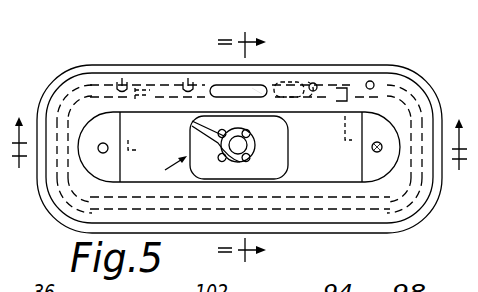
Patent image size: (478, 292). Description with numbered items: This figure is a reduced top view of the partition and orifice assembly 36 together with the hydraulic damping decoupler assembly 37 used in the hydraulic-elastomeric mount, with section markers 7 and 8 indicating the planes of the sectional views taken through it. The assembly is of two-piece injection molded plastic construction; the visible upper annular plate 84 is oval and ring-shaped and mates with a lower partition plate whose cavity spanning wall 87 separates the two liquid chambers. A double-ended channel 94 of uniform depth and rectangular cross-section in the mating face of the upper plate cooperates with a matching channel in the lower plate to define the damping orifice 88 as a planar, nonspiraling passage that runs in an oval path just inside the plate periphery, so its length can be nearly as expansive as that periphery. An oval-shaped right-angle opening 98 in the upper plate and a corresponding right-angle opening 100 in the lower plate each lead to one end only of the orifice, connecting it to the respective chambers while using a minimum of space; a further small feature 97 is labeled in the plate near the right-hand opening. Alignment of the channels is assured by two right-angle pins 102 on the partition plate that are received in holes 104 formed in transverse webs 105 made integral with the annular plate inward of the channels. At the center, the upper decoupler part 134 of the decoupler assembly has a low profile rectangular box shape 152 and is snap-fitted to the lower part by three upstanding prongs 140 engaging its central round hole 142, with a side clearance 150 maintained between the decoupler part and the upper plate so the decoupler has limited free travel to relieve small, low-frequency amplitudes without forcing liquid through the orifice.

The section line 7- 7 is at (239, 130).
The section line 8- 8 is at (255, 147).
The partition and orifice assembly 36 is at (56, 76).
The hydraulic damping decoupler assembly 37 is at (162, 169).
The upper annular plate 84 is at (42, 153).
The cavity spanning wall 87 is at (350, 181).
The damping orifice 88 is at (125, 78).
The double-ended channel 94 is at (187, 78).
The pin 97 is at (373, 83).
The right-angle opening 98 is at (257, 90).
The right-angle opening 100 is at (316, 84).
The right-angle pins 102 is at (102, 143).
The holes 104 is at (374, 151).
The transverse webs 105 is at (93, 165).
The upper decoupler part 134 is at (282, 182).
The upstanding prongs 140 is at (191, 128).
The central round hole 142 is at (255, 140).
The side clearance 150 is at (203, 112).
The rectangular box shape 152 is at (285, 158).